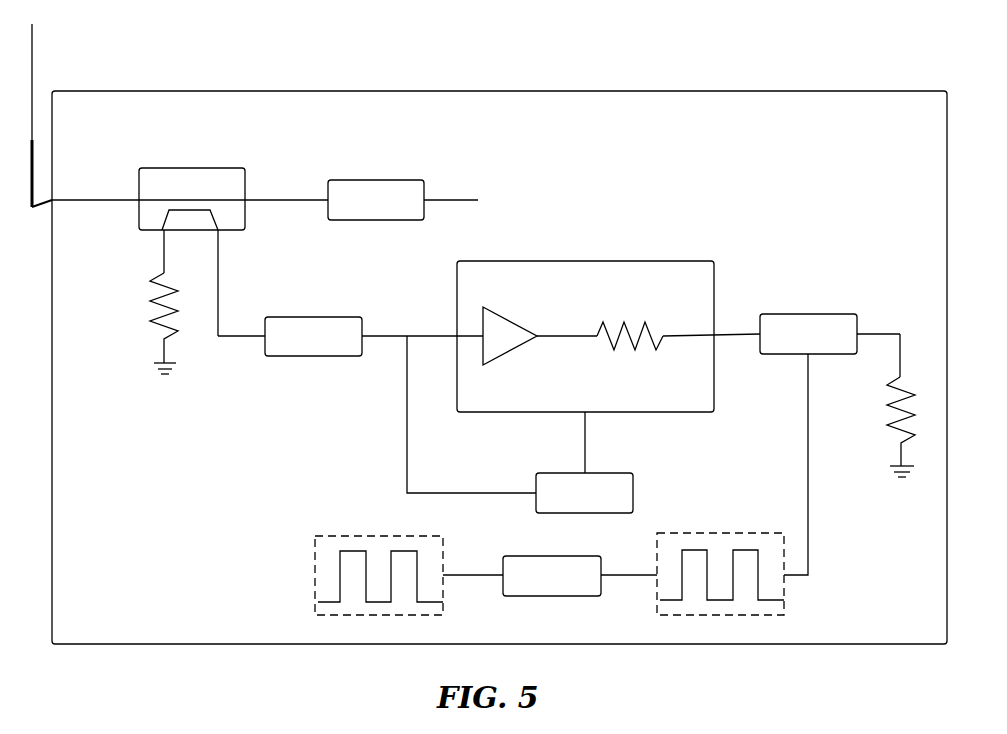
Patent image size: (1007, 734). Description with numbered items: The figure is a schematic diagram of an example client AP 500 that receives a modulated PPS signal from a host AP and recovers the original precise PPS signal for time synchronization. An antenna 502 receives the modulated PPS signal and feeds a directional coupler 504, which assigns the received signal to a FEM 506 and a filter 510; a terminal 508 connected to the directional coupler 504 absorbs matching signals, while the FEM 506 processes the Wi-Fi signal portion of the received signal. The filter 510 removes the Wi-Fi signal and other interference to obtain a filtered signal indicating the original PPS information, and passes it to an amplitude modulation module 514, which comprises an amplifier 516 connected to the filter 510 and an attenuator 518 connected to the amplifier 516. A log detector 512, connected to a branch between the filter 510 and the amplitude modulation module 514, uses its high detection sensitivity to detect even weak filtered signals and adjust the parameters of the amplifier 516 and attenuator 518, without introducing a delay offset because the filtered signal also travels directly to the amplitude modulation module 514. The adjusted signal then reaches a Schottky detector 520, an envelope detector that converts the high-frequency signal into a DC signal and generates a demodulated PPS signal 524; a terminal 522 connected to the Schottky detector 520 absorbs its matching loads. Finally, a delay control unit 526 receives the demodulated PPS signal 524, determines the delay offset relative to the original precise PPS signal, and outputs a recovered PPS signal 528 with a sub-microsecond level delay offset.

The client AP 500 is at (880, 91).
The antenna 502 is at (33, 34).
The directional coupler 504 is at (245, 171).
The FEM 506 is at (390, 180).
The terminal 508 is at (165, 275).
The filter 510 is at (326, 317).
The log detector 512 is at (596, 473).
The amplitude modulation module 514 is at (663, 261).
The amplifier 516 is at (500, 313).
The attenuator 518 is at (646, 323).
The Schottky detector 520 is at (816, 314).
The terminal 522 is at (901, 378).
The demodulated PPS signal 524 is at (745, 533).
The delay control unit 526 is at (565, 556).
The recovered PPS signal 528 is at (405, 536).